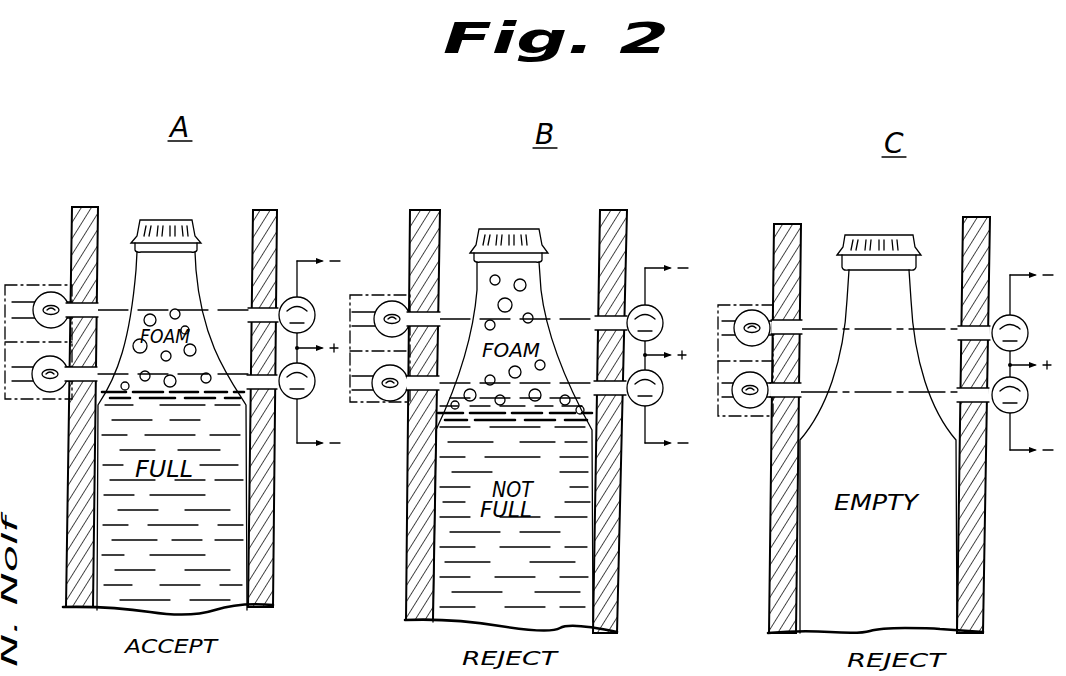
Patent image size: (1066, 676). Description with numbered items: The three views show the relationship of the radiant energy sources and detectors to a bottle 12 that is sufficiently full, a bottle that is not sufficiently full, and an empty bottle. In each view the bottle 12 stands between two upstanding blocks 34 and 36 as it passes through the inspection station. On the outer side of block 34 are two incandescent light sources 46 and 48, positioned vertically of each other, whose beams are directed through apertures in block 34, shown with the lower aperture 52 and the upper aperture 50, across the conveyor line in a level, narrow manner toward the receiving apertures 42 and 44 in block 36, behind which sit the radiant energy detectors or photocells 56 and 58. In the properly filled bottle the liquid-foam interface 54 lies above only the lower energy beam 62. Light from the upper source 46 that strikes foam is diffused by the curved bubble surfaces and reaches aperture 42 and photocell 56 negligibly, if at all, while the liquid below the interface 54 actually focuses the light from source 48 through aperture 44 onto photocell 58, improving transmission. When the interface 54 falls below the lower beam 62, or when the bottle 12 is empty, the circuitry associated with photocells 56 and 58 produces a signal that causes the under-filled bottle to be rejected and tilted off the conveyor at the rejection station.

In FIG. 2A, the bottle 12 is at (253, 406).
In FIG. 2B, the bottle 12 is at (600, 414).
In FIG. 2C, the bottle 12 is at (963, 424).
In FIG. 2A, the upstanding block 34 is at (70, 240).
In FIG. 2B, the upstanding block 34 is at (409, 222).
In FIG. 2C, the upstanding block 34 is at (774, 248).
In FIG. 2A, the upstanding block 36 is at (278, 225).
In FIG. 2B, the upstanding block 36 is at (628, 238).
In FIG. 2C, the upstanding block 36 is at (991, 250).
In FIG. 2A, the receiving aperture 42 is at (253, 316).
In FIG. 2B, the receiving aperture 42 is at (600, 322).
In FIG. 2C, the receiving aperture 42 is at (963, 331).
In FIG. 2A, the receiving aperture 44 is at (252, 384).
In FIG. 2B, the receiving aperture 44 is at (600, 388).
In FIG. 2C, the receiving aperture 44 is at (963, 393).
In FIG. 2A, the incandescent light source 46 is at (40, 296).
In FIG. 2B, the incandescent light source 46 is at (392, 301).
In FIG. 2C, the incandescent light source 46 is at (753, 310).
In FIG. 2A, the incandescent light source 48 is at (47, 393).
In FIG. 2B, the incandescent light source 48 is at (386, 401).
In FIG. 2C, the incandescent light source 48 is at (760, 408).
In FIG. 2A, the upper aperture in left wall 50 is at (98, 312).
In FIG. 2B, the upper aperture in left wall 50 is at (440, 320).
In FIG. 2C, the upper aperture in left wall 50 is at (801, 330).
In FIG. 2A, the lower aperture in left wall 52 is at (98, 376).
In FIG. 2C, the lower aperture in left wall 52 is at (815, 386).
In FIG. 2A, the liquid-foam interface 54 is at (205, 372).
In FIG. 2B, the liquid-foam interface 54 is at (437, 433).
In FIG. 2A, the photocell 56 is at (308, 306).
In FIG. 2C, the photocell 56 is at (1022, 326).
In FIG. 2A, the photocell 58 is at (312, 388).
In FIG. 2C, the photocell 58 is at (1025, 403).
In FIG. 2A, the lower energy beam 62 is at (67, 429).
In FIG. 2B, the lower energy beam 62 is at (447, 391).
In FIG. 2C, the lower energy beam 62 is at (888, 397).